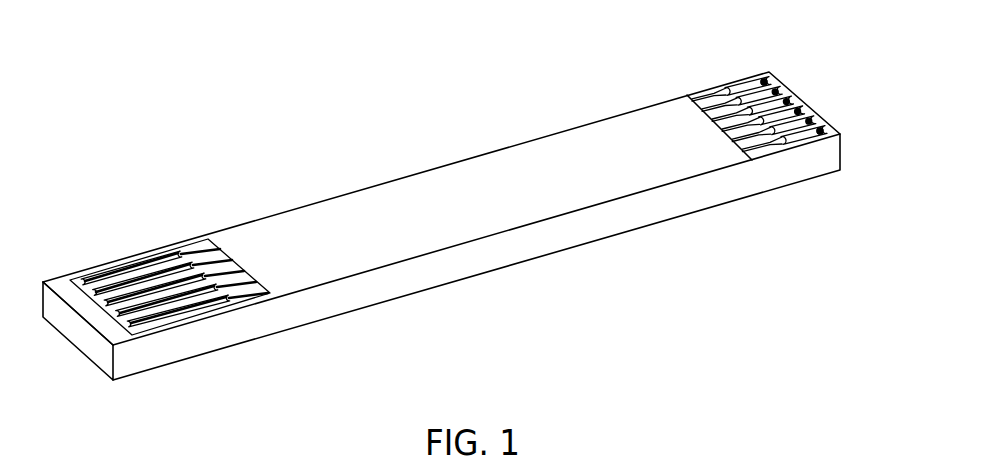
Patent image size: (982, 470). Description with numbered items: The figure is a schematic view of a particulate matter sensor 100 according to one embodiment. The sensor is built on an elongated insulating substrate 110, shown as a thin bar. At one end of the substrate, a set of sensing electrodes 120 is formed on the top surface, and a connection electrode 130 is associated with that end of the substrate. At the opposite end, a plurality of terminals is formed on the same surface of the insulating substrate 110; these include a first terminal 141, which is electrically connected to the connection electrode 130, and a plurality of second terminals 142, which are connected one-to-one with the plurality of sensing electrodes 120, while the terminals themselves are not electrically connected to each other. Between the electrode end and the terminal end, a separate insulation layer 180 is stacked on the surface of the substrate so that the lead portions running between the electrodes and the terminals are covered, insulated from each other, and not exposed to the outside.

The particulate matter sensor 100 is at (600, 83).
The insulating substrate 110 is at (838, 157).
The sensing electrodes 120 is at (103, 273).
The connection electrode 130 is at (102, 317).
The first terminal 141 is at (768, 72).
The second terminals 142 is at (792, 85).
The insulation layer 180 is at (413, 193).